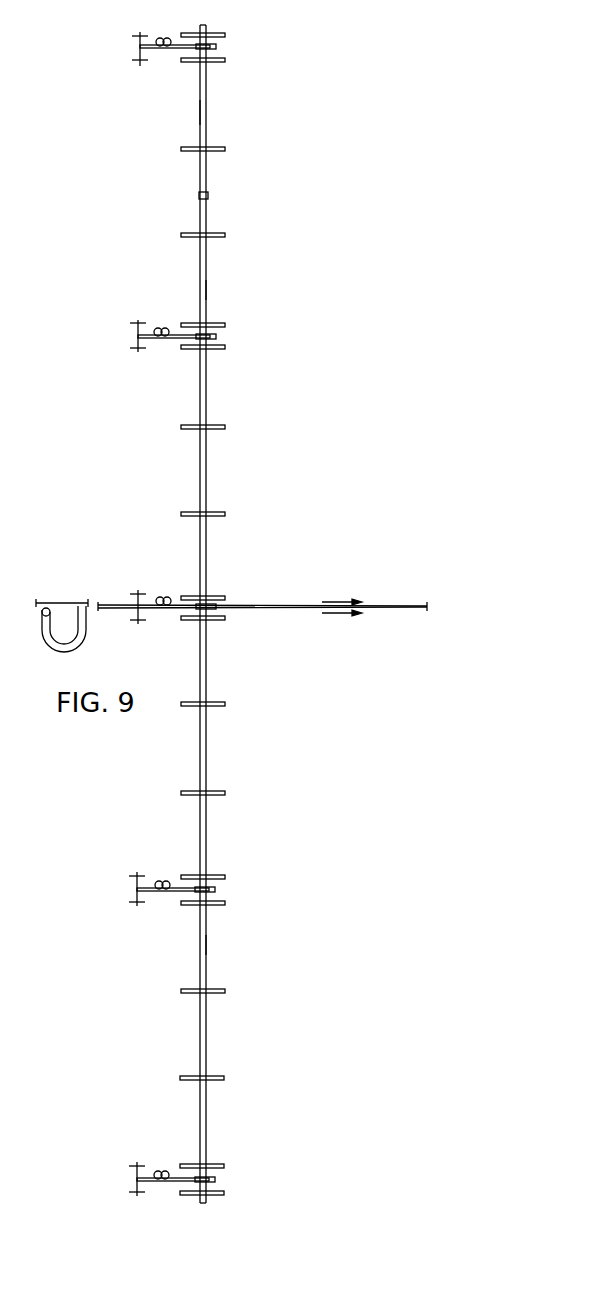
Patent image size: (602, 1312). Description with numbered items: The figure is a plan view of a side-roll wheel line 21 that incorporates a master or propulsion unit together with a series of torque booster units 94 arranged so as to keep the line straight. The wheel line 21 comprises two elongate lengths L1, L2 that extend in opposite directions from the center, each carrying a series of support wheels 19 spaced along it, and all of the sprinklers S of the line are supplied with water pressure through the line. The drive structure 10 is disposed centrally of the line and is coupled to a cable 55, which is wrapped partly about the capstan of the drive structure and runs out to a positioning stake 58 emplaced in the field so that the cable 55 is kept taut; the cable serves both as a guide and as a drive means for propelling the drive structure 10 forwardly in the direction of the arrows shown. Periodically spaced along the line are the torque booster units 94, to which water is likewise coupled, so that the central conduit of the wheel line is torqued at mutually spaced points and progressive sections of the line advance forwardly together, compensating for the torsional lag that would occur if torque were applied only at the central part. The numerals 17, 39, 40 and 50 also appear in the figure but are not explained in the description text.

The drive structure 10 is at (225, 603).
The frame 17 is at (9, 500).
The support wheels 19 is at (222, 62).
The wheel line 21 is at (207, 487).
The hook bar 39 is at (36, 604).
The hook 40 is at (83, 634).
The shaft section 50 is at (200, 113).
The cable 55 is at (297, 609).
The positioning stake 58 is at (425, 607).
The torque booster units 94 is at (214, 46).
The sprinklers S is at (200, 196).
The elongate length L1 is at (207, 292).
The elongate length L2 is at (207, 945).